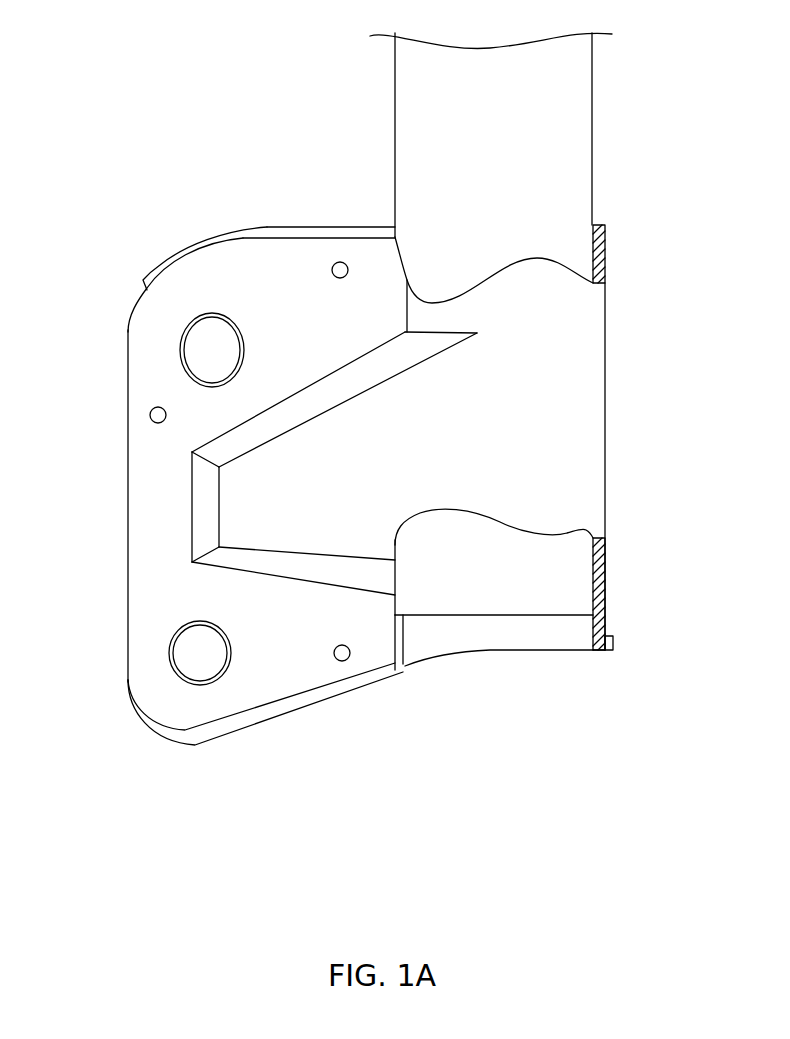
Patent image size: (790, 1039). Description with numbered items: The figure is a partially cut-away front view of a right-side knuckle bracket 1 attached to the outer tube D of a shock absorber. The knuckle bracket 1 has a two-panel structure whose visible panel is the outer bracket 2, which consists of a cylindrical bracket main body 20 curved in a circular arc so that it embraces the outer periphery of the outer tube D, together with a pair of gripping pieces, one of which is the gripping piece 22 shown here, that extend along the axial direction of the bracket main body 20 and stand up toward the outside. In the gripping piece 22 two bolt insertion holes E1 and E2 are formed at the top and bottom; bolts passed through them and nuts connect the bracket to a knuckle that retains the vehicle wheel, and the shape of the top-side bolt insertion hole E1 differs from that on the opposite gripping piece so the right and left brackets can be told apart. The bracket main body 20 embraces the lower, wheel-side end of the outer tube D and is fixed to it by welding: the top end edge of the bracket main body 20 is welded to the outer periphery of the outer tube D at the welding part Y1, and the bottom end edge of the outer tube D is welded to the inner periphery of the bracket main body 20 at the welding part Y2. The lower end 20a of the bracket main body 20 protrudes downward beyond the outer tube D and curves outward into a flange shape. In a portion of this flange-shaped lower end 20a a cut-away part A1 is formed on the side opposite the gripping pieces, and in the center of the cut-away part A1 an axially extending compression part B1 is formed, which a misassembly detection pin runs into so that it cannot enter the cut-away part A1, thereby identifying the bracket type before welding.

The knuckle bracket 1 is at (258, 433).
The outer bracket 2 is at (258, 486).
The gripping piece 22 is at (143, 502).
The bracket main body 20 is at (609, 430).
The lower end 20a is at (516, 660).
The outer tube D is at (573, 128).
The welding part Y1 is at (598, 221).
The welding part Y2 is at (590, 617).
The cut-away part A1 is at (611, 634).
The compression part B1 is at (598, 652).
The bolt insertion hole E1 is at (222, 360).
The bolt insertion hole E2 is at (215, 660).